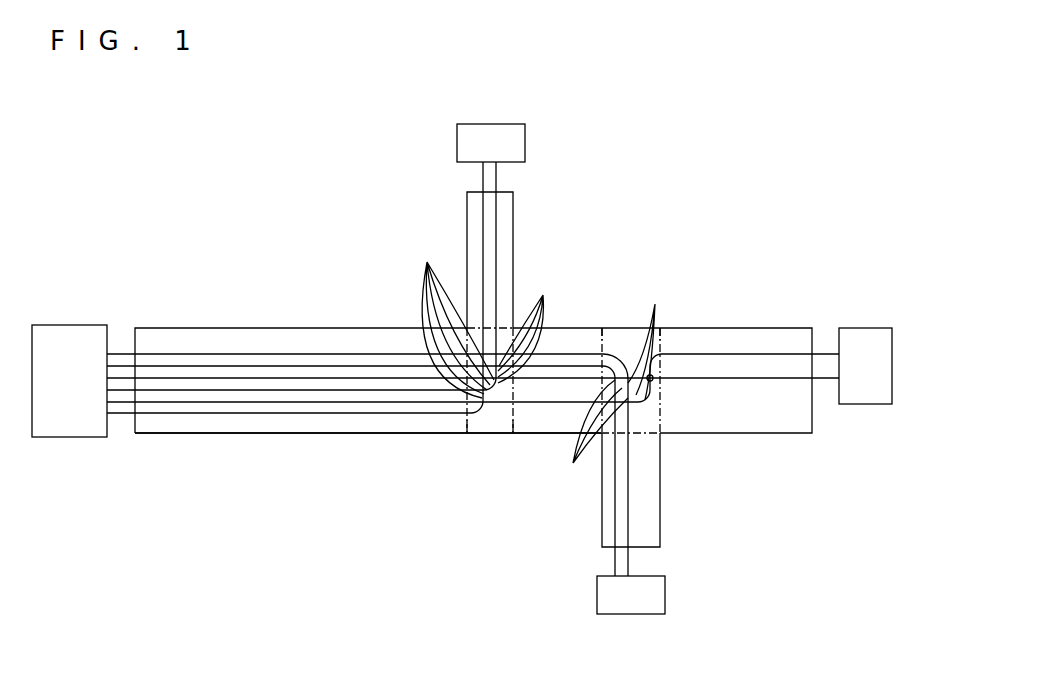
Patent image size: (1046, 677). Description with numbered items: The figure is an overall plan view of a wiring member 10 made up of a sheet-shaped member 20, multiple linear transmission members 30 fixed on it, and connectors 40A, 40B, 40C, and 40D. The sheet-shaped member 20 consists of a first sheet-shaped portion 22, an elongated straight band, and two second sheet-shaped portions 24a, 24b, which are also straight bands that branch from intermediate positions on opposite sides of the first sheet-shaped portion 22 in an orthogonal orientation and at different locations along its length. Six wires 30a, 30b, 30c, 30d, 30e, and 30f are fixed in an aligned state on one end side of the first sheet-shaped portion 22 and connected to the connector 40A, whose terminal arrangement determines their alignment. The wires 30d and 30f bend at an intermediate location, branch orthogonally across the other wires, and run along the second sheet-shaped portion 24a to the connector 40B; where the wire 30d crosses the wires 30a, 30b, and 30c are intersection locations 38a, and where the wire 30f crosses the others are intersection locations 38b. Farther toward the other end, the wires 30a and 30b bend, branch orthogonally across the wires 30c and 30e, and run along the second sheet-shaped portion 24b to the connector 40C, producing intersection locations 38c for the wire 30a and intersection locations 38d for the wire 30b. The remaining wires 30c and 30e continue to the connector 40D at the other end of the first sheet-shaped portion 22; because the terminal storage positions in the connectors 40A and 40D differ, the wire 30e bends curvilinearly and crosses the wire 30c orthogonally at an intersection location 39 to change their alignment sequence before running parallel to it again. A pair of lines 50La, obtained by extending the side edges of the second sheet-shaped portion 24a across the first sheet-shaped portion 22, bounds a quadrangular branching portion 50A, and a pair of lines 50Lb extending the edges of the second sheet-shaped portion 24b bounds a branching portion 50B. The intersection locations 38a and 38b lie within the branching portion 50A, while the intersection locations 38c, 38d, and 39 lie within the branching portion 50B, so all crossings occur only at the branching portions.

The wiring member 10 is at (150, 458).
The sheet-shaped member 20 is at (185, 436).
The first sheet-shaped portion 22 is at (238, 435).
The second sheet-shaped portion 24a is at (466, 208).
The second sheet-shaped portion 24b is at (601, 524).
The linear transmission member 30 is at (153, 352).
The wire 30a is at (630, 507).
The wire 30b is at (617, 540).
The wire 30c is at (313, 378).
The wire 30d is at (370, 390).
The wire 30e is at (291, 403).
The wire 30f is at (353, 414).
The intersection locations 38a is at (536, 326).
The intersection locations 38b is at (452, 316).
The intersection locations 38c is at (653, 338).
The intersection locations 38d is at (584, 433).
The intersection location 39 is at (655, 380).
The connector 40A is at (70, 325).
The connector 40B is at (530, 143).
The connector 40C is at (668, 598).
The connector 40D is at (865, 404).
The branching portion 50A is at (488, 434).
The branching portion 50B is at (627, 345).
The lines 50La is at (467, 425).
The lines 50Lb is at (600, 352).